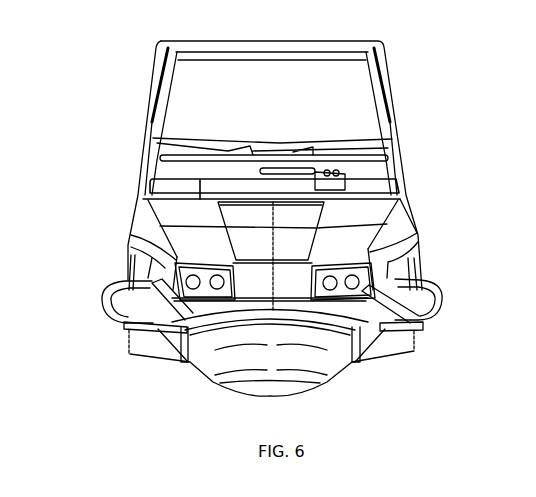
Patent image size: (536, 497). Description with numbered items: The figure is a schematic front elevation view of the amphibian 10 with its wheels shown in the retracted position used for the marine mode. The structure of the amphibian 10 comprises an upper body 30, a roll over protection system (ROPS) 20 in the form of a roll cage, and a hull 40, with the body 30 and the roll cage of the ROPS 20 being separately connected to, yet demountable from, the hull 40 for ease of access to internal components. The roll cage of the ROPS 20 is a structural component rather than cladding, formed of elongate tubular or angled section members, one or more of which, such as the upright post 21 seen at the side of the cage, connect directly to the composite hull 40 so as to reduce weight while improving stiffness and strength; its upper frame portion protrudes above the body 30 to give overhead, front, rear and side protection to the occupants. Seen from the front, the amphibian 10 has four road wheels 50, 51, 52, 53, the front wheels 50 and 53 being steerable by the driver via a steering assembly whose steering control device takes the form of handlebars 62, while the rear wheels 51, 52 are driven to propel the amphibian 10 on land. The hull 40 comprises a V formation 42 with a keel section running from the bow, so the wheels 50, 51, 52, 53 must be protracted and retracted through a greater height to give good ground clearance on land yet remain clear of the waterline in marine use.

The amphibian 10 is at (450, 155).
The roll over protection system (ROPS) 20 is at (395, 52).
The front post of roll cage 21 is at (150, 98).
The upper body 30 is at (420, 217).
The hull 40 is at (213, 357).
The V formation 42 is at (362, 383).
The front wheel 50 is at (413, 303).
The rear wheel 51 is at (440, 292).
The rear wheel 52 is at (103, 293).
The front wheel 53 is at (127, 310).
The handlebars 62 is at (280, 166).